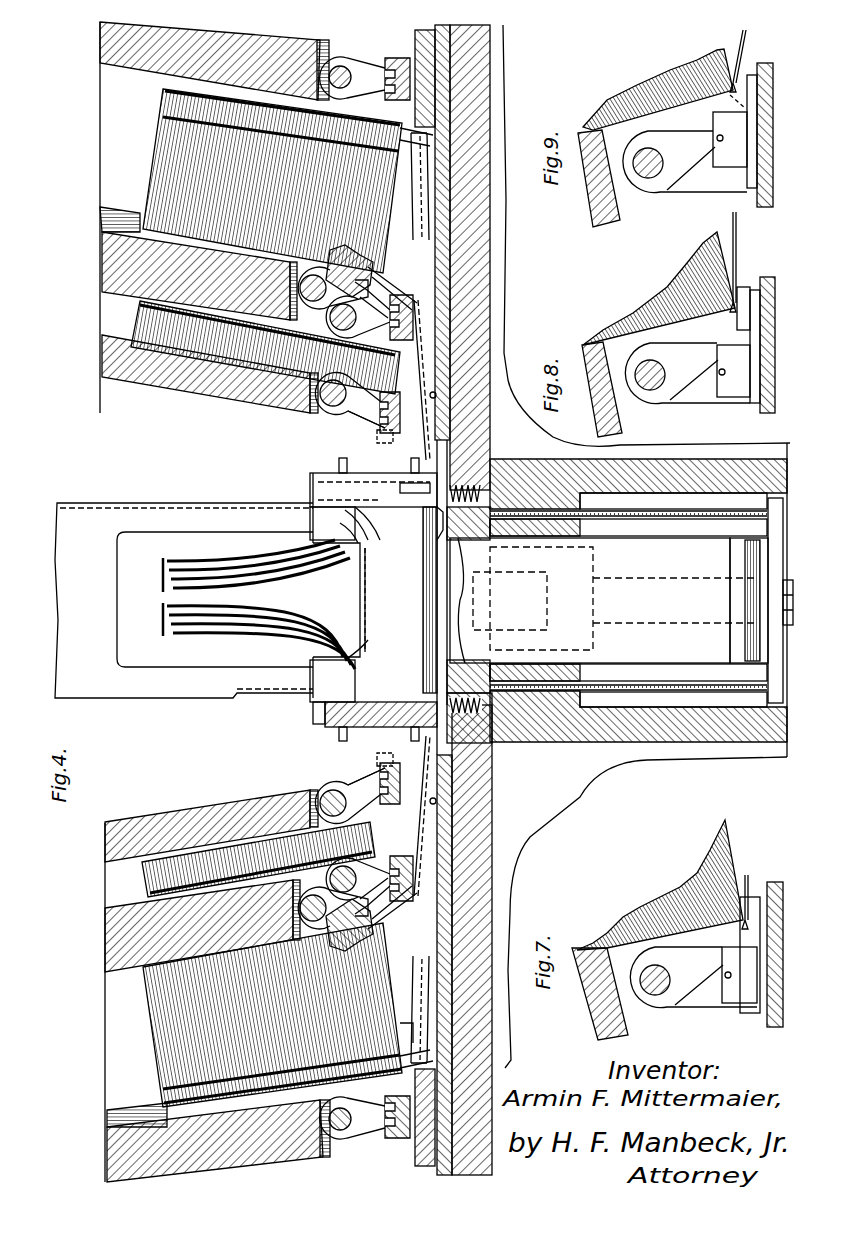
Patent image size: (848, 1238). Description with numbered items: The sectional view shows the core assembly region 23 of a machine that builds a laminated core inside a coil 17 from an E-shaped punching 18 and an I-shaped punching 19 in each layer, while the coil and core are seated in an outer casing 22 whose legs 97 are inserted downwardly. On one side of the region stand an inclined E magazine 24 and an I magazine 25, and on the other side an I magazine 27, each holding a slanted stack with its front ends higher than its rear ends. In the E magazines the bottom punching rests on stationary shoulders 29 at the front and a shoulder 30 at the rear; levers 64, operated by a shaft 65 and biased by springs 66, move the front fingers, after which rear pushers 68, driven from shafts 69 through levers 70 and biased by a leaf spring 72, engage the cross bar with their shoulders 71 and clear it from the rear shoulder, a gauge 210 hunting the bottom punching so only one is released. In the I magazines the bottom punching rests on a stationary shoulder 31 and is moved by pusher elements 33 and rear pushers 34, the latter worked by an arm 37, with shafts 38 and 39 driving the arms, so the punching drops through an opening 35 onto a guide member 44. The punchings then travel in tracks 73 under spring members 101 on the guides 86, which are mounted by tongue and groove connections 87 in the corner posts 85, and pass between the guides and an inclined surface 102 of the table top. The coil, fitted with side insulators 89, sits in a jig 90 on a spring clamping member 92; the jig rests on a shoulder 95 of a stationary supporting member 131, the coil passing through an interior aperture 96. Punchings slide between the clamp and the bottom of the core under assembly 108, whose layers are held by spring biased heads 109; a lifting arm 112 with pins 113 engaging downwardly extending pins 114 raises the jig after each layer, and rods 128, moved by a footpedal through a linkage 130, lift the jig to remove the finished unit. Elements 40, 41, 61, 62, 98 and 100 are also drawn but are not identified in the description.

In FIG. 4, the coil 17 is at (358, 605).
In FIG. 4, the E-shaped punching 18 is at (153, 182).
In FIG. 9, the E-shaped punching 18 is at (637, 87).
In FIG. 8, the E-shaped punching 18 is at (650, 302).
In FIG. 7, the E-shaped punching 18 is at (662, 866).
In FIG. 4, the I-shaped punching 19 is at (120, 312).
In FIG. 4, the outer casing 22 is at (88, 502).
In FIG. 4, the core assembly region 23 is at (320, 577).
In FIG. 4, the E magazine 24 is at (118, 182).
In FIG. 4, the I magazine 25 is at (112, 305).
In FIG. 4, the I magazine 27 is at (112, 888).
In FIG. 4, the stationary shoulders 29 is at (385, 277).
In FIG. 4, the shoulder 30 is at (413, 1018).
In FIG. 8, the shoulder 30 is at (745, 285).
In FIG. 7, the shoulder 30 is at (748, 897).
In FIG. 4, the stationary shoulder 31 is at (392, 808).
In FIG. 4, the movable pusher elements 33 is at (397, 255).
In FIG. 4, the movable pushers 34 is at (417, 300).
In FIG. 4, the opening 35 is at (375, 432).
In FIG. 4, the arm 37 is at (372, 308).
In FIG. 4, the shaft 38 is at (330, 407).
In FIG. 4, the shaft 39 is at (330, 320).
In FIG. 4, the rod 40 is at (422, 598).
In FIG. 4, the guide 41 is at (422, 423).
In FIG. 4, the guide member 44 is at (440, 378).
In FIG. 4, the plate 61 is at (416, 598).
In FIG. 4, the plate 62 is at (418, 193).
In FIG. 4, the levers 64 is at (335, 270).
In FIG. 4, the shaft 65 is at (290, 283).
In FIG. 4, the springs 66 is at (407, 992).
In FIG. 4, the rear pushers 68 is at (392, 58).
In FIG. 9, the rear pushers 68 is at (730, 167).
In FIG. 8, the rear pushers 68 is at (738, 398).
In FIG. 7, the rear pushers 68 is at (743, 1004).
In FIG. 4, the shafts 69 is at (340, 66).
In FIG. 9, the shafts 69 is at (647, 178).
In FIG. 8, the shafts 69 is at (648, 390).
In FIG. 7, the shafts 69 is at (656, 996).
In FIG. 4, the levers 70 is at (365, 70).
In FIG. 9, the levers 70 is at (682, 165).
In FIG. 8, the levers 70 is at (690, 380).
In FIG. 7, the levers 70 is at (697, 988).
In FIG. 4, the shoulders 71 is at (392, 1090).
In FIG. 4, the leaf spring 72 is at (410, 115).
In FIG. 4, the tracks 73 is at (420, 310).
In FIG. 4, the corner posts 85 is at (318, 507).
In FIG. 4, the guides 86 is at (335, 727).
In FIG. 4, the tongue and groove connections 87 is at (312, 718).
In FIG. 4, the side insulators 89 is at (642, 540).
In FIG. 4, the jig 90 is at (437, 396).
In FIG. 4, the spring clamping member 92 is at (448, 650).
In FIG. 4, the shoulder 95 is at (492, 503).
In FIG. 4, the interior aperture 96 is at (538, 536).
In FIG. 4, the legs 97 is at (230, 503).
In FIG. 4, the member 98 is at (515, 745).
In FIG. 4, the wires 100 is at (160, 612).
In FIG. 4, the spring members 101 is at (412, 768).
In FIG. 4, the inclined surface 102 is at (505, 745).
In FIG. 4, the core under assembly 108 is at (423, 600).
In FIG. 4, the spring biased heads 109 is at (437, 525).
In FIG. 4, the lifting arm 112 is at (650, 626).
In FIG. 4, the pins 113 is at (548, 570).
In FIG. 4, the downwardly extending pins 114 is at (518, 578).
In FIG. 4, the rods 128 is at (780, 444).
In FIG. 8, the rods 128 is at (780, 444).
In FIG. 4, the linkage 130 is at (786, 582).
In FIG. 4, the stationary supporting member 131 is at (645, 748).
In FIG. 9, the gauge 210 is at (736, 60).
In FIG. 8, the gauge 210 is at (736, 290).
In FIG. 7, the gauge 210 is at (738, 888).